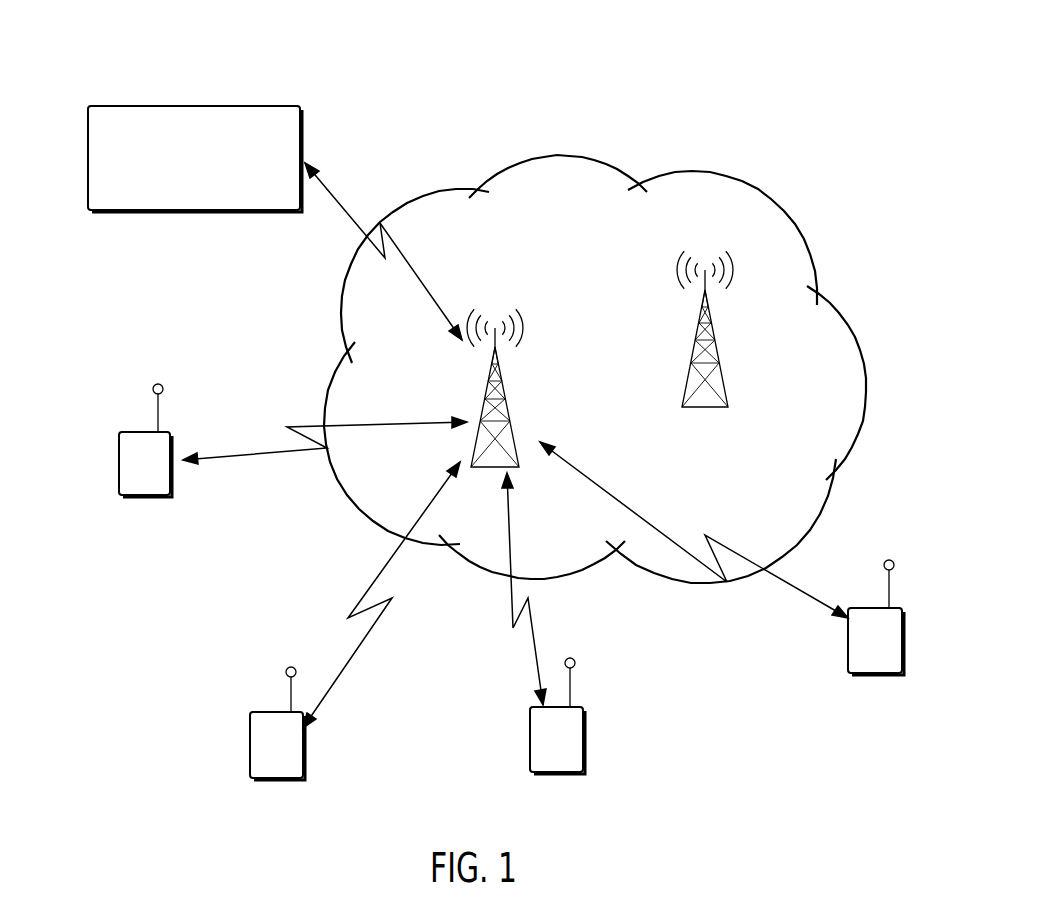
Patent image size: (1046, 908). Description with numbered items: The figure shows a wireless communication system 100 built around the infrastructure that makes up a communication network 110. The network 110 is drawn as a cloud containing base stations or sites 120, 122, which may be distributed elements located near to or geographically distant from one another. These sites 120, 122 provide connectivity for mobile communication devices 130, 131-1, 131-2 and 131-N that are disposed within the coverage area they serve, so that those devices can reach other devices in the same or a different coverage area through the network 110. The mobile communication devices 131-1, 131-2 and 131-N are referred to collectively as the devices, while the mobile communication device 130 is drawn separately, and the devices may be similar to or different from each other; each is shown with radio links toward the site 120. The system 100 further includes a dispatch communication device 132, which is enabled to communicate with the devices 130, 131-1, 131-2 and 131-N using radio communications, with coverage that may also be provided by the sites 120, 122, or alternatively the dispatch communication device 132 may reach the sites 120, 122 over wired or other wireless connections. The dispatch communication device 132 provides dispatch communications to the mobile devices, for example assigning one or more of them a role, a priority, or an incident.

The wireless communication system 100 is at (790, 55).
The communication network 110 is at (790, 212).
The base station 120 is at (487, 395).
The base station 122 is at (690, 347).
The mobile communication device 130 is at (119, 463).
The mobile communication device 131-1 is at (848, 638).
The mobile communication device 131-2 is at (530, 737).
The mobile communication device 131-N is at (250, 745).
The dispatch communication device 132 is at (88, 157).